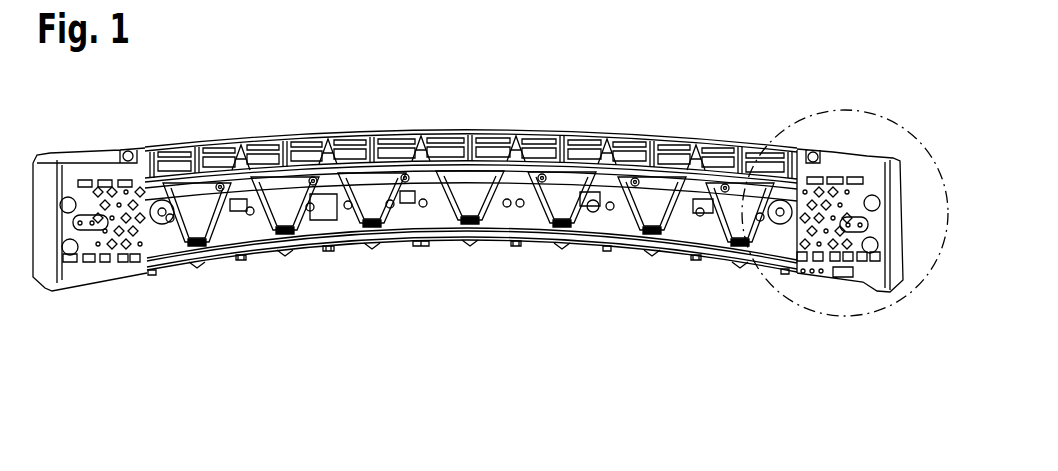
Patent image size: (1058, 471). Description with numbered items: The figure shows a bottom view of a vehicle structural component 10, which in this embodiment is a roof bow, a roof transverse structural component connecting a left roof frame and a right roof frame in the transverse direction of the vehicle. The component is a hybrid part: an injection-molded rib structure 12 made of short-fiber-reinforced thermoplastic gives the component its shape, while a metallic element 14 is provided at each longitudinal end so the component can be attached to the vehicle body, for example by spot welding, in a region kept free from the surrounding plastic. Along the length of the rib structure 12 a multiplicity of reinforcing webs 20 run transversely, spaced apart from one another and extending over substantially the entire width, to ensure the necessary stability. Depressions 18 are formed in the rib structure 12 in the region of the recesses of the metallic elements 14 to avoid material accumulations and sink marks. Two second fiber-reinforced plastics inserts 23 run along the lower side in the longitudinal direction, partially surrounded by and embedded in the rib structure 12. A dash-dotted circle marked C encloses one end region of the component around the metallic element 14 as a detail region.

The vehicle structural component 10 is at (764, 69).
The injection-molded rib structure 12 is at (440, 205).
The metallic element 14 is at (890, 280).
The depressions 18 is at (137, 240).
The reinforcing webs 20 is at (571, 190).
The second fiber-reinforced plastics inserts 23 is at (400, 230).
The detail view region C is at (852, 110).